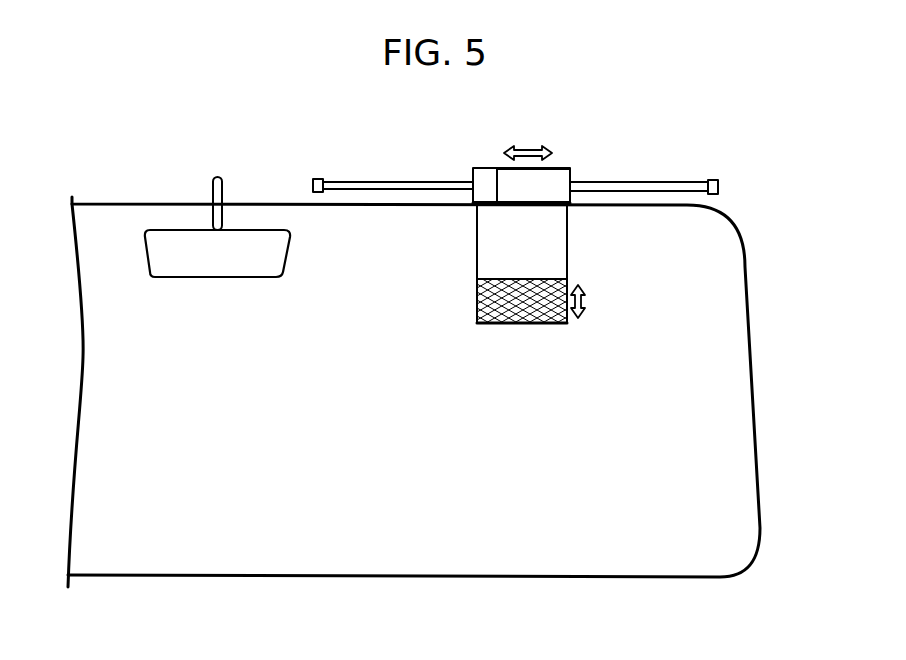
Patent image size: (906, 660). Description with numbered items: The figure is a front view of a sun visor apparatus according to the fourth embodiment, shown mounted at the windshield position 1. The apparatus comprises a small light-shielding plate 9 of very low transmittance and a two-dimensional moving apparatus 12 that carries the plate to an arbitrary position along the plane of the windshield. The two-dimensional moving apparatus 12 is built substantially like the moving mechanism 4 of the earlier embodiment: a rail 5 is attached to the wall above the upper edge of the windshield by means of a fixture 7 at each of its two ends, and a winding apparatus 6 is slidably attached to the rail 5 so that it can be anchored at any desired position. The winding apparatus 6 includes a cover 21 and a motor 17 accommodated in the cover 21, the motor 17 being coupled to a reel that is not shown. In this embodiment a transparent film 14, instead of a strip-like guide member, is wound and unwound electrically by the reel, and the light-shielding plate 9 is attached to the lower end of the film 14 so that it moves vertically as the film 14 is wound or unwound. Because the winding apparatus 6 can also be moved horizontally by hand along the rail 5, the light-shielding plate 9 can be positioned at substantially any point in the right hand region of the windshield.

The vehicle body / door panel 1 is at (347, 553).
The moving mechanism 4 is at (658, 173).
The rail 5 is at (402, 182).
The winding apparatus 6 is at (563, 162).
The fixture 7 is at (320, 179).
The light-shielding plate 9 is at (477, 297).
The two-dimensional moving apparatus 12 is at (554, 145).
The transparent film 14 is at (487, 245).
The motor 17 is at (481, 168).
The cover 21 is at (571, 168).